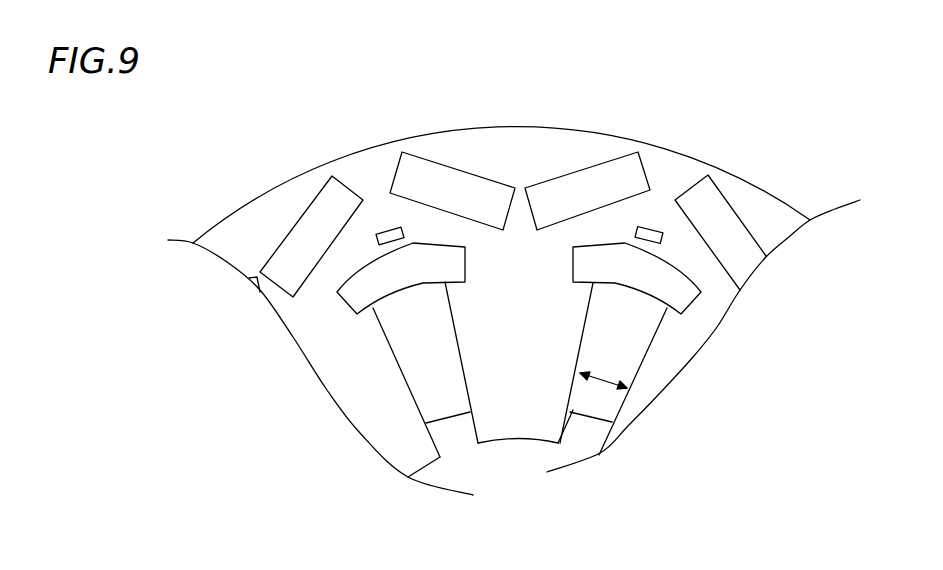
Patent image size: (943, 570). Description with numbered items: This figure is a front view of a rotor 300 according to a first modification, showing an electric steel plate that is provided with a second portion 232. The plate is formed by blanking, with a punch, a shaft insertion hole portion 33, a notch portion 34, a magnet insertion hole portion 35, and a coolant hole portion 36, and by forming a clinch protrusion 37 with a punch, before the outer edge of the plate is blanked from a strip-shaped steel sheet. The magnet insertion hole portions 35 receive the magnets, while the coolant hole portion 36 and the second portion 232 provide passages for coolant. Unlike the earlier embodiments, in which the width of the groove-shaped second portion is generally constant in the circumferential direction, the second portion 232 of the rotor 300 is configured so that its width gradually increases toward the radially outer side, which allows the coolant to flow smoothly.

The rotor 300 is at (305, 132).
The magnet insertion hole portion 35 is at (619, 160).
The clinch protrusion 37 is at (651, 229).
The coolant hole portion 36 is at (677, 273).
The second portion 232 is at (613, 358).
The notch portion 34 is at (462, 423).
The shaft insertion hole portion 33 is at (528, 444).